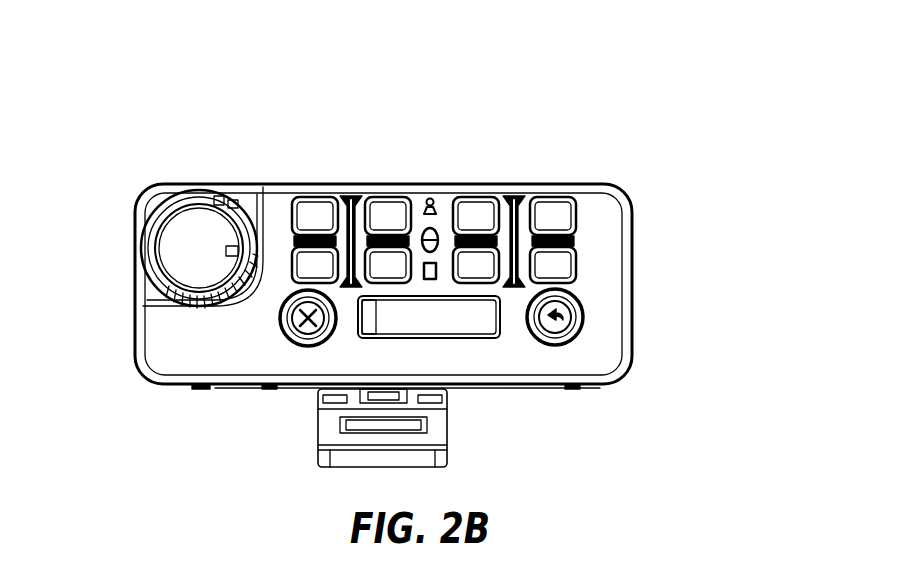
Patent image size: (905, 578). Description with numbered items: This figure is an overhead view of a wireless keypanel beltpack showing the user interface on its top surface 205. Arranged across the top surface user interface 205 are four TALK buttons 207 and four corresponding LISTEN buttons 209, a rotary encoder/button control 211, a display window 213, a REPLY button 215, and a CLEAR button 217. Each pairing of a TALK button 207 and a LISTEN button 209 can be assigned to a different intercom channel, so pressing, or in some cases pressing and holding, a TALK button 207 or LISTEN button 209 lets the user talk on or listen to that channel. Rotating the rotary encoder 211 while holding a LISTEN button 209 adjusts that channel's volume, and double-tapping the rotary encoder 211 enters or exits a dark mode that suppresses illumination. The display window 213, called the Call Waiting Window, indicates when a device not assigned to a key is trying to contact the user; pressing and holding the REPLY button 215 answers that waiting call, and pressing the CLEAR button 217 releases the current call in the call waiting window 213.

The top surface user interface 205 is at (238, 108).
The TALK button 207 is at (552, 216).
The LISTEN button 209 is at (548, 255).
The rotary encoder/button control 211 is at (188, 213).
The display window (Call Waiting Window) 213 is at (447, 318).
The REPLY button 215 is at (583, 331).
The CLEAR button 217 is at (297, 338).